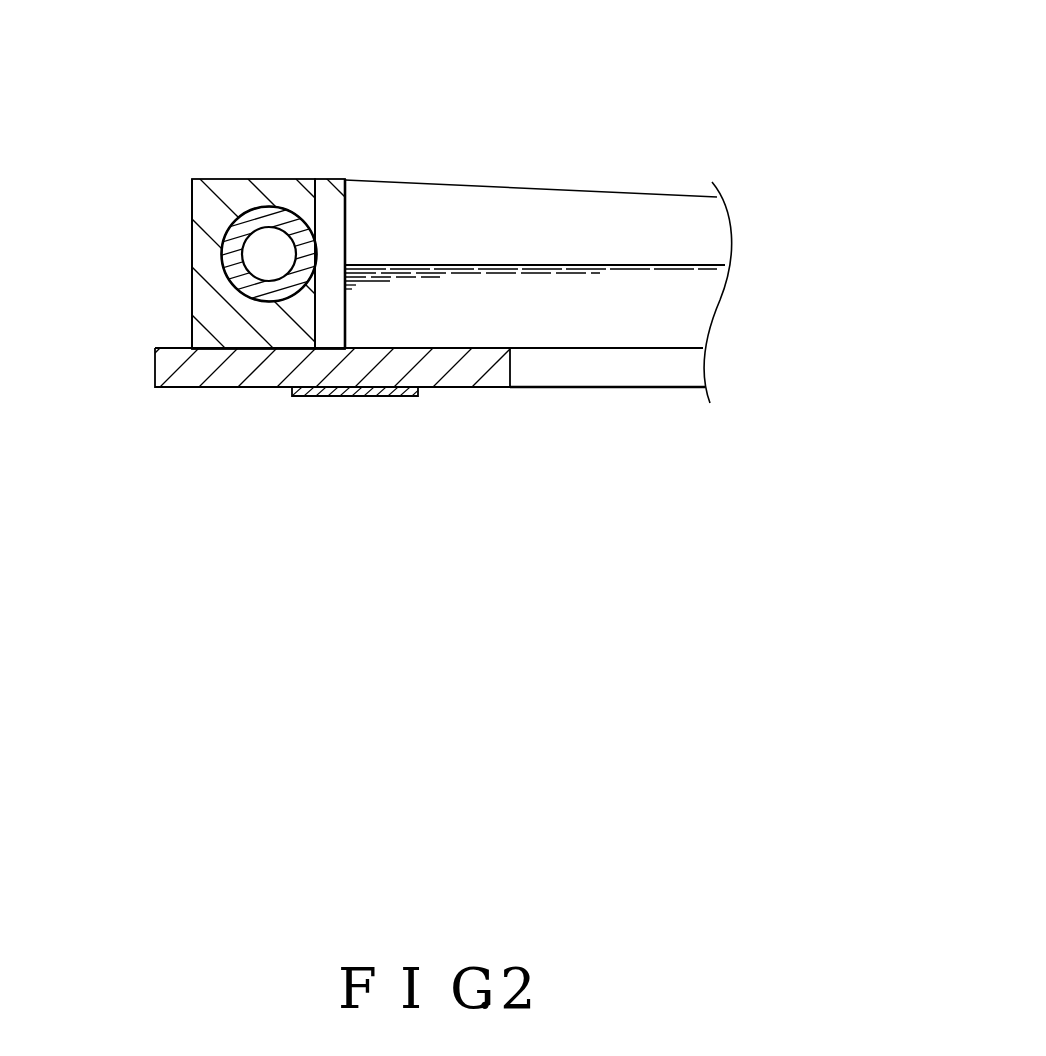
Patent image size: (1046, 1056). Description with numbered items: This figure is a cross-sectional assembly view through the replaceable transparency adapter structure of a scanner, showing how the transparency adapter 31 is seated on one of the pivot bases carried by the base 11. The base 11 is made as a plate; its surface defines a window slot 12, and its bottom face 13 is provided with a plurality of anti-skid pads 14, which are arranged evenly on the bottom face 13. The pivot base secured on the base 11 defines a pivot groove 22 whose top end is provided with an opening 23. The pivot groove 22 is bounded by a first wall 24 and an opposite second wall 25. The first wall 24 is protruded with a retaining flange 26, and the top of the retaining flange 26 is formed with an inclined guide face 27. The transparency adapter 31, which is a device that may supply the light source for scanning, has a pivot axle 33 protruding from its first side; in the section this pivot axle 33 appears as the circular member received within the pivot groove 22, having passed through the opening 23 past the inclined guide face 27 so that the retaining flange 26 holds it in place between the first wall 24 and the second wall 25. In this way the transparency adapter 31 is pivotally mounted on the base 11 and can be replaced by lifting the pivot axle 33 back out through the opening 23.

The base 11 is at (155, 368).
The window slot 12 is at (630, 388).
The bottom face 13 is at (222, 387).
The anti-skid pad 14 is at (363, 396).
The pivot groove 22 is at (266, 301).
The opening 23 is at (290, 187).
The first wall 24 is at (192, 247).
The second wall 25 is at (347, 215).
The retaining flange 26 is at (236, 221).
The inclined guide face 27 is at (238, 221).
The transparency adapter 31 is at (592, 208).
The pivot axle 33 is at (228, 264).